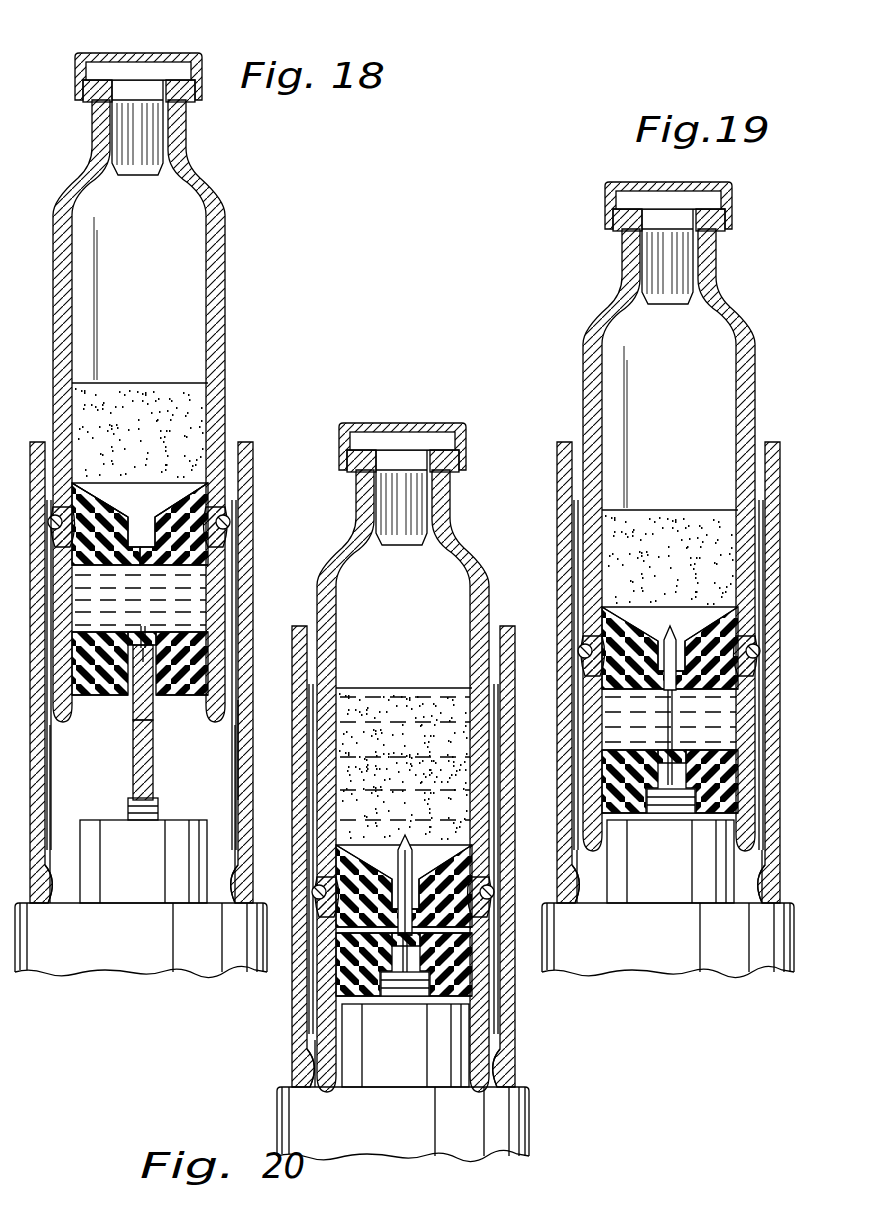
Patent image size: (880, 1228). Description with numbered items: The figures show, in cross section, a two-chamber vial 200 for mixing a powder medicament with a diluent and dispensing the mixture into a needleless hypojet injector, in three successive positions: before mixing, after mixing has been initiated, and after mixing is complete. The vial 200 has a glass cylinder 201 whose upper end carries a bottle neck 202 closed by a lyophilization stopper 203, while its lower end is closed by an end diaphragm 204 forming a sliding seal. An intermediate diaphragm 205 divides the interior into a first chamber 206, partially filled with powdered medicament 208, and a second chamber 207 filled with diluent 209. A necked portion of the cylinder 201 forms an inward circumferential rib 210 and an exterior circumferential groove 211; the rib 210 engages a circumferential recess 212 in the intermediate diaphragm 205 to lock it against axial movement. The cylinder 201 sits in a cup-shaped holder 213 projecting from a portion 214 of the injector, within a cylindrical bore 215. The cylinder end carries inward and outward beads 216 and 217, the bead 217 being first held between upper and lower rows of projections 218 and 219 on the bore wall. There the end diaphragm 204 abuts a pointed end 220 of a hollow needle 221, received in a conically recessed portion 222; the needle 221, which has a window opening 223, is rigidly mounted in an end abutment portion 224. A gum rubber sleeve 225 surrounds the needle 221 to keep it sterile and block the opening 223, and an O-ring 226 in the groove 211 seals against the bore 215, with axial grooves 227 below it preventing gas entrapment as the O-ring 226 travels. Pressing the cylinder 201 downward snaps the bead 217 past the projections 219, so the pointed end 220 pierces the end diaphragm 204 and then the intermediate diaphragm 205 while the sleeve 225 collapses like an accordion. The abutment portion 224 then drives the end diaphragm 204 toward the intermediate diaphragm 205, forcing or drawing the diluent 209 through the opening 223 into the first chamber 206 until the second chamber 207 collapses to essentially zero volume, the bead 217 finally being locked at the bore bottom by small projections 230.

In FIG. 18, the two-chamber vial 200 is at (233, 215).
In FIG. 19, the two-chamber vial 200 is at (588, 320).
In FIG. 20, the two-chamber vial 200 is at (470, 523).
In FIG. 18, the glass cylinder 201 is at (229, 325).
In FIG. 19, the glass cylinder 201 is at (584, 349).
In FIG. 20, the glass cylinder 201 is at (470, 568).
In FIG. 18, the bottle neck 202 is at (192, 117).
In FIG. 19, the bottle neck 202 is at (628, 242).
In FIG. 20, the bottle neck 202 is at (460, 486).
In FIG. 18, the lyophilization stopper 203 is at (118, 68).
In FIG. 19, the lyophilization stopper 203 is at (636, 196).
In FIG. 20, the lyophilization stopper 203 is at (432, 428).
In FIG. 18, the end diaphragm 204 is at (210, 640).
In FIG. 19, the end diaphragm 204 is at (712, 828).
In FIG. 20, the end diaphragm 204 is at (483, 980).
In FIG. 18, the intermediate diaphragm 205 is at (225, 497).
In FIG. 19, the intermediate diaphragm 205 is at (624, 630).
In FIG. 20, the intermediate diaphragm 205 is at (472, 855).
In FIG. 18, the first chamber 206 is at (193, 262).
In FIG. 19, the first chamber 206 is at (718, 320).
In FIG. 18, the second chamber 207 is at (202, 580).
In FIG. 19, the second chamber 207 is at (610, 713).
In FIG. 18, the powdered medicament 208 is at (194, 396).
In FIG. 19, the powdered medicament 208 is at (672, 517).
In FIG. 20, the powdered medicament 208 is at (402, 690).
In FIG. 18, the diluent 209 is at (192, 602).
In FIG. 20, the diluent 209 is at (455, 690).
In FIG. 18, the circumferential rib 210 is at (96, 505).
In FIG. 18, the circumferential groove 211 is at (140, 577).
In FIG. 18, the circumferential recess 212 is at (205, 510).
In FIG. 18, the cup-shaped holder 213 is at (252, 556).
In FIG. 19, the cup-shaped holder 213 is at (560, 442).
In FIG. 20, the cup-shaped holder 213 is at (508, 628).
In FIG. 18, the portion of needleless hypojet injector 214 is at (152, 958).
In FIG. 19, the portion of needleless hypojet injector 214 is at (665, 947).
In FIG. 20, the portion of needleless hypojet injector 214 is at (508, 1132).
In FIG. 18, the cylindrical bore 215 is at (240, 792).
In FIG. 20, the cylindrical bore 215 is at (317, 1000).
In FIG. 18, the radially inwardly extending bead 216 is at (142, 814).
In FIG. 19, the radially inwardly extending bead 216 is at (610, 848).
In FIG. 20, the radially inwardly extending bead 216 is at (343, 1085).
In FIG. 18, the radially outwardly extending bead 217 is at (240, 703).
In FIG. 18, the upper row of projections 218 is at (237, 672).
In FIG. 20, the upper row of projections 218 is at (318, 870).
In FIG. 18, the lower row of projections 219 is at (135, 675).
In FIG. 19, the lower row of projections 219 is at (582, 737).
In FIG. 18, the pointed end 220 is at (160, 622).
In FIG. 19, the pointed end 220 is at (688, 634).
In FIG. 20, the pointed end 220 is at (407, 838).
In FIG. 18, the diaphragm piercing hollow needle 221 is at (133, 790).
In FIG. 19, the diaphragm piercing hollow needle 221 is at (681, 703).
In FIG. 20, the diaphragm piercing hollow needle 221 is at (432, 860).
In FIG. 18, the conically recessed portion 222 is at (148, 712).
In FIG. 18, the window opening 223 is at (140, 760).
In FIG. 19, the window opening 223 is at (667, 735).
In FIG. 20, the window opening 223 is at (396, 928).
In FIG. 18, the end abutment portion 224 is at (172, 838).
In FIG. 19, the end abutment portion 224 is at (700, 890).
In FIG. 20, the end abutment portion 224 is at (462, 1041).
In FIG. 18, the gum rubber sleeve 225 is at (132, 722).
In FIG. 19, the gum rubber sleeve 225 is at (665, 812).
In FIG. 20, the gum rubber sleeve 225 is at (396, 998).
In FIG. 18, the O-ring 226 is at (230, 520).
In FIG. 19, the O-ring 226 is at (579, 656).
In FIG. 20, the O-ring 226 is at (494, 893).
In FIG. 18, the axially extending slots or grooves 227 is at (138, 604).
In FIG. 19, the axially extending slots or grooves 227 is at (574, 561).
In FIG. 20, the axially extending slots or grooves 227 is at (312, 750).
In FIG. 18, the projections 230 is at (62, 895).
In FIG. 19, the projections 230 is at (590, 890).
In FIG. 20, the projections 230 is at (318, 1085).